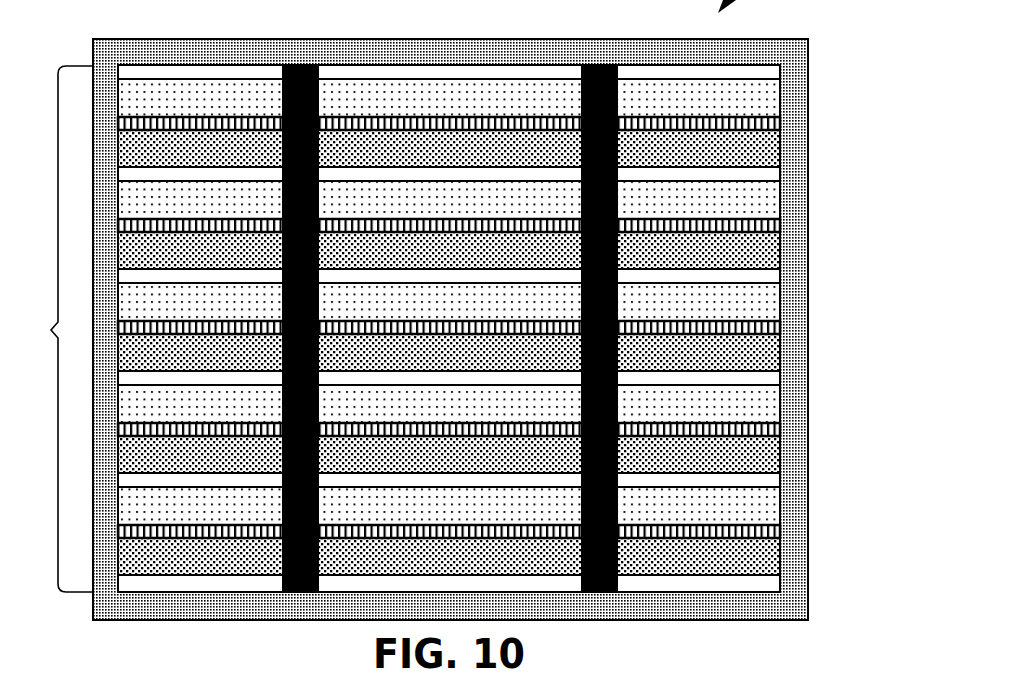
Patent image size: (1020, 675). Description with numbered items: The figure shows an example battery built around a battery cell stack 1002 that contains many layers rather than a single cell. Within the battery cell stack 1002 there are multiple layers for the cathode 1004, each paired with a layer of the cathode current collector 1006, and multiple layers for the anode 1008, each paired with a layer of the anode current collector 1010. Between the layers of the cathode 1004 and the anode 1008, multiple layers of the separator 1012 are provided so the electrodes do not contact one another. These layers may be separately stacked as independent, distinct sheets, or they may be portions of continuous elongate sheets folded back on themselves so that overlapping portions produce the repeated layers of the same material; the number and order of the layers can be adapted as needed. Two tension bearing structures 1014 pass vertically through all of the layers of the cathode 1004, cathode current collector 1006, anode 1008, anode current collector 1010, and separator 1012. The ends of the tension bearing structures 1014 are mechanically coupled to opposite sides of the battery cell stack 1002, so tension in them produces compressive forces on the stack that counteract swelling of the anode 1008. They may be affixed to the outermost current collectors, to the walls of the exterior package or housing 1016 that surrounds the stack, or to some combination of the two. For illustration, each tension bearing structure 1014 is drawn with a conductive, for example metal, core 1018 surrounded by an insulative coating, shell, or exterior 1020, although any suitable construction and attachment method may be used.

The battery cell stack 1002 is at (50, 329).
The cathode 1004 is at (780, 151).
The cathode current collector 1006 is at (780, 174).
The anode 1008 is at (780, 100).
The anode current collector 1010 is at (780, 72).
The separator 1012 is at (780, 123).
The tension bearing structures 1014 is at (593, 150).
The housing 1016 is at (101, 48).
The conductive core 1018 is at (300, 72).
The insulative exterior 1020 is at (281, 102).